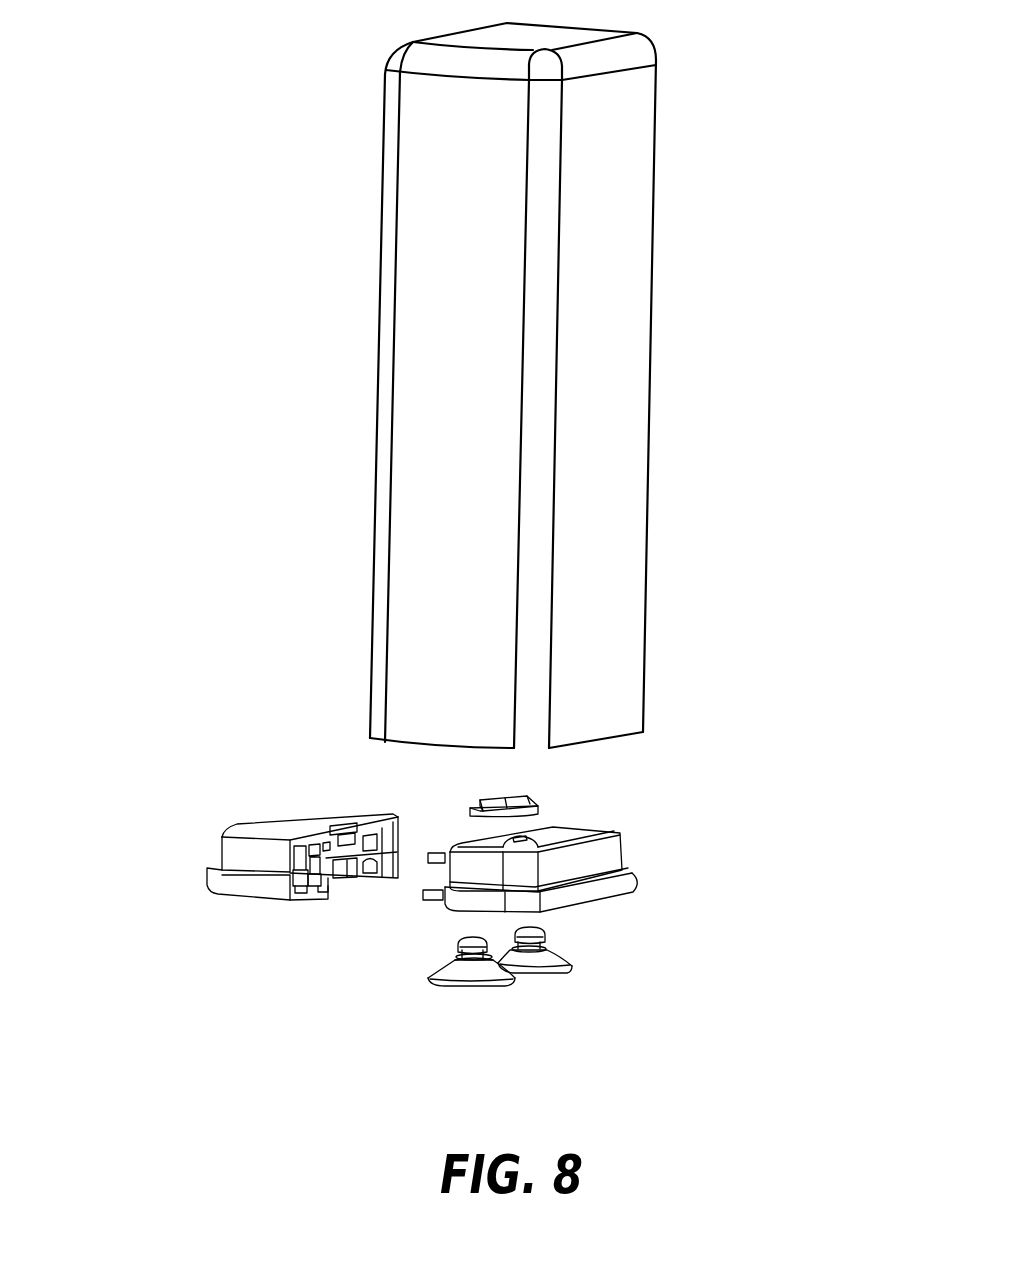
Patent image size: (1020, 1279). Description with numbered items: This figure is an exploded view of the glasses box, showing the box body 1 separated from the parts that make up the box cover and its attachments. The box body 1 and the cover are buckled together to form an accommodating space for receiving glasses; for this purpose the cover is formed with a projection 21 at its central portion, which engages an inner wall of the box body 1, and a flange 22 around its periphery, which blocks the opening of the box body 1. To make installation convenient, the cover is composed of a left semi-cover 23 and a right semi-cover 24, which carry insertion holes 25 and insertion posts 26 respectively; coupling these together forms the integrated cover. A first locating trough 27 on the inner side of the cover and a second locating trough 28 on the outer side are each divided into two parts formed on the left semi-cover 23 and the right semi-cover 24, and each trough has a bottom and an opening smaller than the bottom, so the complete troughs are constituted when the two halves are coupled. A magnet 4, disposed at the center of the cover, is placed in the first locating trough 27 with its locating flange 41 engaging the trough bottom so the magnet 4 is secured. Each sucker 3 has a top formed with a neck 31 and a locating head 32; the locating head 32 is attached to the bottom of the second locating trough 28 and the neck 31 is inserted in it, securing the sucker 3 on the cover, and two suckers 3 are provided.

The box body 1 is at (598, 557).
The magnet 4 is at (515, 798).
The locating flange 41 is at (532, 806).
The projection 21 is at (625, 837).
The right semi-cover 24 is at (598, 862).
The flange 22 is at (612, 892).
The left semi-cover 23 is at (243, 856).
The first locating trough 27 is at (322, 828).
The insertion holes 25 is at (300, 890).
The second locating trough 28 is at (322, 884).
The insertion posts 26 is at (443, 858).
The sucker 3 is at (533, 962).
The neck 31 is at (547, 955).
The locating head 32 is at (543, 933).